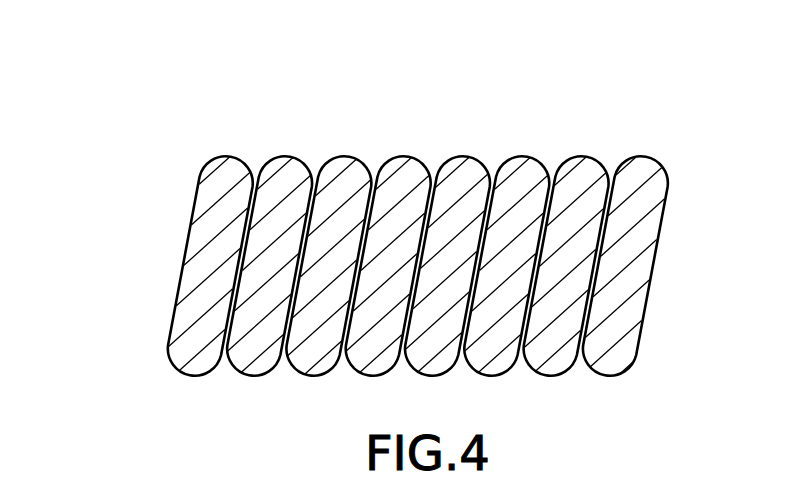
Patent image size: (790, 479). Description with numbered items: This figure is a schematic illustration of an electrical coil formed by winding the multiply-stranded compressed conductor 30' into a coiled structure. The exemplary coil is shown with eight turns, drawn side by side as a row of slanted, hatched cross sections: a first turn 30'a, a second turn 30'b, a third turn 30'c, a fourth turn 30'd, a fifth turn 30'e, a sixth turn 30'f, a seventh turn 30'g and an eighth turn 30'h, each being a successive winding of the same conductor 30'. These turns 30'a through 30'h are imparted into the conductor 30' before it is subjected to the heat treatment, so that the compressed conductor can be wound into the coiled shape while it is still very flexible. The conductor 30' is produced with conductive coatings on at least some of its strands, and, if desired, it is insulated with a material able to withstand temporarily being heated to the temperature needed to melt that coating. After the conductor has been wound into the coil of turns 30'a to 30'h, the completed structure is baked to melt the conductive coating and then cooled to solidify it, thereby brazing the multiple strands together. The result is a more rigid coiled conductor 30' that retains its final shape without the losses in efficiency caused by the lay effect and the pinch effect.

The conductor 30' is at (366, 266).
The first turn 30'a is at (227, 233).
The second turn 30'b is at (286, 222).
The third turn 30'c is at (344, 233).
The fourth turn 30'd is at (405, 222).
The fifth turn 30'e is at (463, 233).
The sixth turn 30'f is at (519, 222).
The seventh turn 30'g is at (582, 233).
The eighth turn 30'h is at (642, 223).